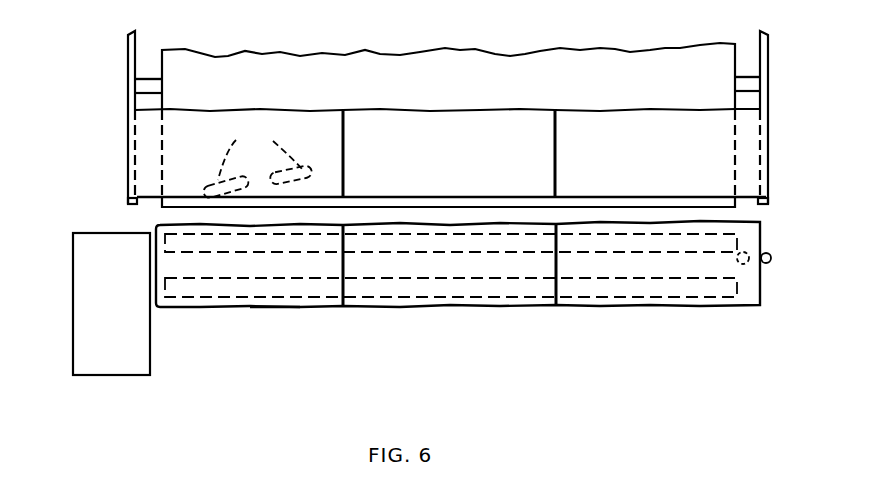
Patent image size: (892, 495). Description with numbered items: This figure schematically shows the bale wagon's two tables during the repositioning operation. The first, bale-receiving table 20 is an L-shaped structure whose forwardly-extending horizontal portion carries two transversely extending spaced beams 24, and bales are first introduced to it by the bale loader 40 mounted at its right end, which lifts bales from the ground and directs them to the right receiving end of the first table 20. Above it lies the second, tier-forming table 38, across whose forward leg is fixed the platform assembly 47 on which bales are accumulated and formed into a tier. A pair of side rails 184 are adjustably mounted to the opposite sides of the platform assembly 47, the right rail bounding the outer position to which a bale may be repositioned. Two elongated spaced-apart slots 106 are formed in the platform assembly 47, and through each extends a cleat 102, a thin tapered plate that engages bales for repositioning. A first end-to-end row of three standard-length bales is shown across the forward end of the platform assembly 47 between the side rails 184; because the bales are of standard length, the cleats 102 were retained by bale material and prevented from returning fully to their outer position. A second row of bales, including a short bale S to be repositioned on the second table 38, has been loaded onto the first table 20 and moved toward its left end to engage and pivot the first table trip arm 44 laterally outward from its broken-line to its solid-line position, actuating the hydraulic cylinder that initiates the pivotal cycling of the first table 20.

The first bale-receiving table 20 is at (617, 305).
The spaced beams 24 is at (477, 253).
The second tier-forming table 38 is at (738, 48).
The bale loader 40 is at (150, 356).
The first table trip arm 44 is at (771, 254).
The platform assembly 47 is at (486, 90).
The cleat 102 is at (298, 175).
The slots 106 is at (260, 152).
The side rails 184 is at (128, 97).
The short bale S is at (259, 307).